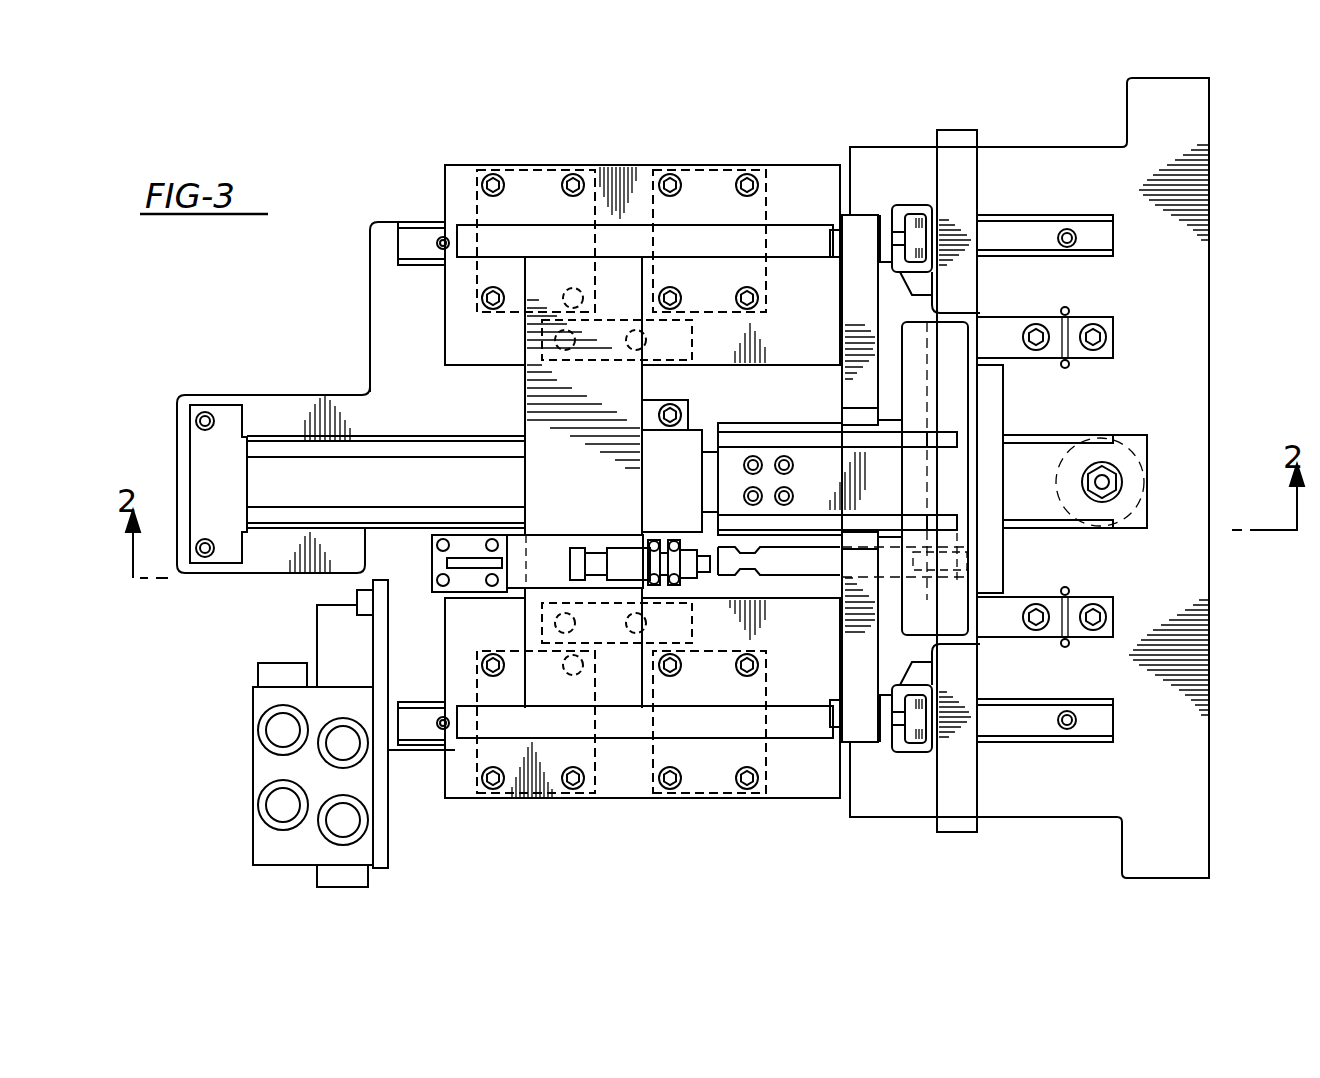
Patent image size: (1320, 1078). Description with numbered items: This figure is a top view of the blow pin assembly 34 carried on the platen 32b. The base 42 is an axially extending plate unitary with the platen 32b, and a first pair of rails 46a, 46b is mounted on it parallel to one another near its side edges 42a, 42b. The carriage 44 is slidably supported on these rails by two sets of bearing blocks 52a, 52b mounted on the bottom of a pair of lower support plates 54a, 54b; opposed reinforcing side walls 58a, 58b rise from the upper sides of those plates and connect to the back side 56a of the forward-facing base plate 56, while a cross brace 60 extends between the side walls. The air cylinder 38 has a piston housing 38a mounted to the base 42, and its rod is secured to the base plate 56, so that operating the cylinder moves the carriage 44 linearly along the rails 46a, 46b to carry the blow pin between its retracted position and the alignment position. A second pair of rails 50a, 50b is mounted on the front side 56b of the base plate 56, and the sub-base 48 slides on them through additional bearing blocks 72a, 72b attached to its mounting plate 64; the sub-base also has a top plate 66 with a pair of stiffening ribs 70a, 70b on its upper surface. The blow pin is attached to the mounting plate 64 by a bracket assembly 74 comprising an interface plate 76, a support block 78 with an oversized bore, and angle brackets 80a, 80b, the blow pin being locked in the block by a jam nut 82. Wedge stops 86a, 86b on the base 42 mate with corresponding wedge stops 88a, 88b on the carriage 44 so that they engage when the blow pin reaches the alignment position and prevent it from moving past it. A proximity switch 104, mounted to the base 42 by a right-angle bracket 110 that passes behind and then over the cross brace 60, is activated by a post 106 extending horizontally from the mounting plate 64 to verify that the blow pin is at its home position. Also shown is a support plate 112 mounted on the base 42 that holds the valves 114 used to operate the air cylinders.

The platen 32b is at (1200, 860).
The blow pin assembly 34 is at (333, 479).
The air cylinder 38 is at (366, 428).
The piston housing 38a is at (263, 470).
The base 42 is at (370, 300).
The side edge of base 42a is at (408, 758).
The side edge of base 42b is at (412, 215).
The carriage 44 is at (615, 474).
The rail 46a is at (420, 740).
The rail 46b is at (398, 237).
The sub-base 48 is at (1005, 134).
The rail 50a is at (890, 722).
The rail 50b is at (895, 235).
The bearing blocks 52a is at (690, 795).
The bearing blocks 52b is at (690, 175).
The lower support plate 54a is at (510, 800).
The lower support plate 54b is at (480, 165).
The base plate 56 is at (862, 225).
The back side of base plate 56a is at (837, 690).
The front side of base plate 56b is at (885, 336).
The side wall 58a is at (780, 738).
The side wall 58b is at (808, 240).
The cross brace 60 is at (530, 397).
The mounting plate 64 is at (958, 148).
The top plate 66 is at (997, 327).
The stiffening rib 70a is at (860, 520).
The stiffening rib 70b is at (800, 437).
The bearing blocks 72a is at (918, 767).
The bearing blocks 72b is at (920, 215).
The bracket assembly 74 is at (1156, 425).
The interface plate 76 is at (997, 568).
The support block 78 is at (1145, 440).
The angle bracket 80a is at (1080, 530).
The angle bracket 80b is at (1045, 437).
The jam nut 82 is at (1110, 490).
The wedge stop 86a is at (995, 630).
The wedge stop 86b is at (1110, 340).
The wedge stop 88a is at (530, 614).
The wedge stop 88b is at (672, 342).
The proximity switch 104 is at (690, 553).
The post 106 is at (805, 567).
The right-angle bracket 110 is at (455, 547).
The support plate 112 is at (253, 716).
The valves 114 is at (270, 800).